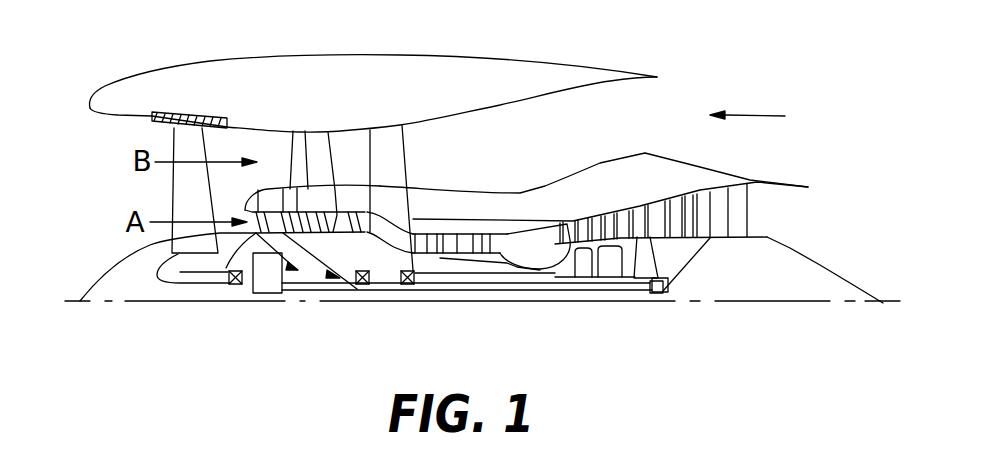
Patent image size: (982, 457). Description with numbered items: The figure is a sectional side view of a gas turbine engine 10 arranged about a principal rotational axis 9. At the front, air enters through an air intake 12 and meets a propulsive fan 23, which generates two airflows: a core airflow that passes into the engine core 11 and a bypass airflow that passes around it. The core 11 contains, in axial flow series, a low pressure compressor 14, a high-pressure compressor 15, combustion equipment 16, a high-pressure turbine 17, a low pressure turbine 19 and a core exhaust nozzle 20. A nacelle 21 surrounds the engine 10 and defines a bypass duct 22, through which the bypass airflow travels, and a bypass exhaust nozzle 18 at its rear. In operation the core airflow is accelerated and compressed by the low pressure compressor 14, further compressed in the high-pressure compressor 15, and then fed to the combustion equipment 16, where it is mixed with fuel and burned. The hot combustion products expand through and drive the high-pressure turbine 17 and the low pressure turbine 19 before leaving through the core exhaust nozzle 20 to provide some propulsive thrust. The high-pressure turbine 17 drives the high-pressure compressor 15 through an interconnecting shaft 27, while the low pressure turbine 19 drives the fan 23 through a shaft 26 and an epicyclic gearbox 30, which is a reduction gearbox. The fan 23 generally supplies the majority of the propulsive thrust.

The principal rotational axis 9 is at (712, 301).
The gas turbine engine 10 is at (154, 72).
The core 11 is at (521, 200).
The air intake 12 is at (103, 151).
The low pressure compressor 14 is at (333, 165).
The high-pressure compressor 15 is at (465, 230).
The combustion equipment 16 is at (547, 245).
The high-pressure turbine 17 is at (595, 231).
The bypass exhaust nozzle 18 is at (762, 116).
The low pressure turbine 19 is at (720, 200).
The core exhaust nozzle 20 is at (785, 219).
The nacelle 21 is at (395, 72).
The bypass duct 22 is at (634, 129).
The propulsive fan 23 is at (177, 192).
The shaft 26 is at (463, 288).
The interconnecting shaft 27 is at (503, 280).
The epicyclic gearbox 30 is at (270, 280).